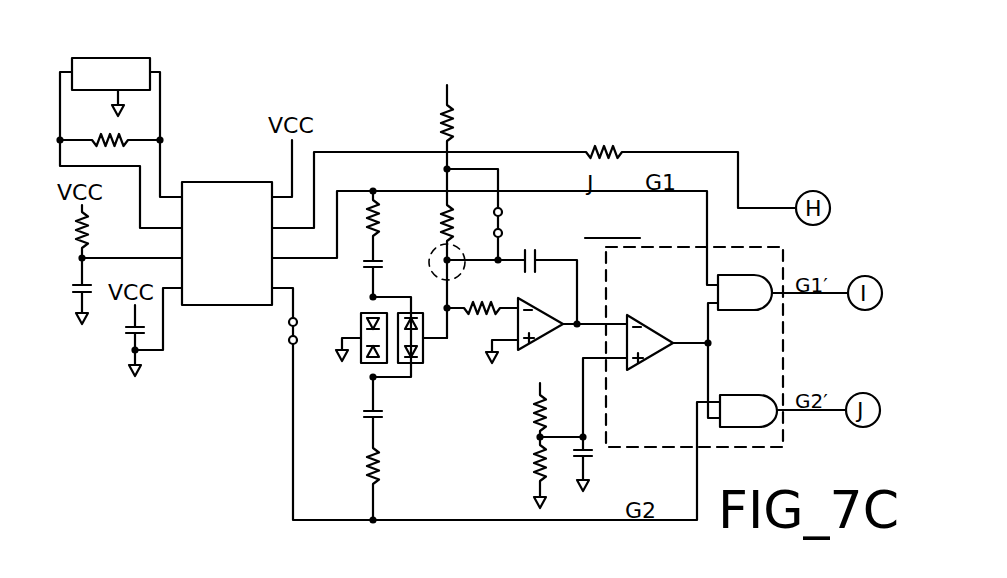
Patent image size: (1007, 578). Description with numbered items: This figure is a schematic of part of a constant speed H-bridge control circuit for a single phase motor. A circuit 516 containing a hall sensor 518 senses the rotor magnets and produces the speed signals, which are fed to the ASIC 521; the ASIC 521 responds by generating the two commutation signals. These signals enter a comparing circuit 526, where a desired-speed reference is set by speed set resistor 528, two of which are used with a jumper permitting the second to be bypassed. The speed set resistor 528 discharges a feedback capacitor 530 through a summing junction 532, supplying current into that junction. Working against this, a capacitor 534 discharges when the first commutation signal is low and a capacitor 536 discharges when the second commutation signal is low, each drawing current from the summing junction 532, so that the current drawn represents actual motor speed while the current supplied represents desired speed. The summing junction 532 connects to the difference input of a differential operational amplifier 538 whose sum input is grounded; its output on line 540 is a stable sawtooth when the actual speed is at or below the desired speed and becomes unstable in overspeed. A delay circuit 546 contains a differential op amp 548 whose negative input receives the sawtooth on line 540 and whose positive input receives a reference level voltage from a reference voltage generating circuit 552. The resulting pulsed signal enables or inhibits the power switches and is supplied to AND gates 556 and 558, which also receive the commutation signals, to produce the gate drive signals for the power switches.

The circuit 516 is at (144, 116).
The hall sensor 518 is at (98, 58).
The ASIC 521 is at (212, 305).
The comparing circuit 526 is at (440, 116).
The speed set resistor 528 is at (505, 200).
The feedback capacitor 530 is at (528, 250).
The summing junction 532 is at (426, 275).
The capacitor 534 is at (362, 268).
The capacitor 536 is at (385, 412).
The differential operational amplifier 538 is at (560, 294).
The line 540 is at (594, 330).
The delay circuit 546 is at (705, 365).
The differential op amp 548 is at (646, 352).
The reference voltage generating circuit 552 is at (534, 462).
The AND gate 556 is at (745, 292).
The AND gate 558 is at (748, 411).